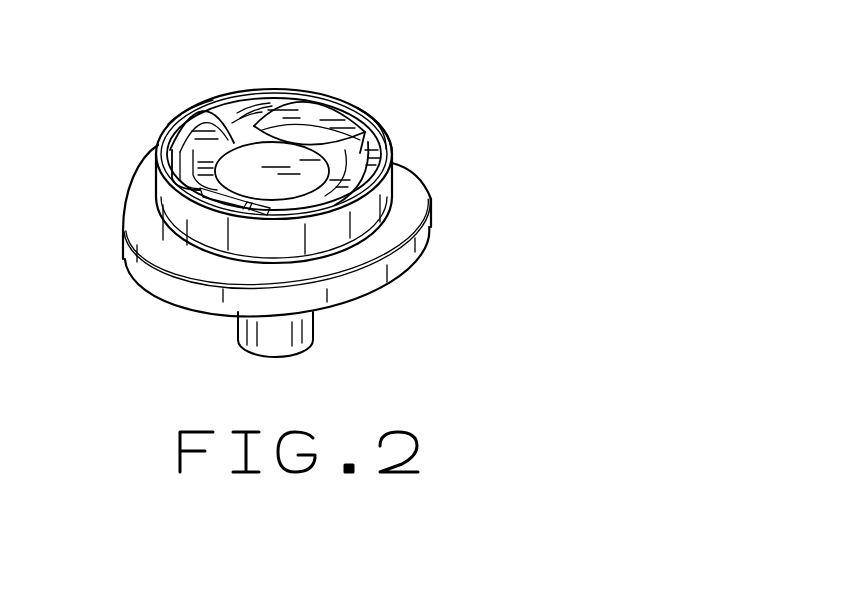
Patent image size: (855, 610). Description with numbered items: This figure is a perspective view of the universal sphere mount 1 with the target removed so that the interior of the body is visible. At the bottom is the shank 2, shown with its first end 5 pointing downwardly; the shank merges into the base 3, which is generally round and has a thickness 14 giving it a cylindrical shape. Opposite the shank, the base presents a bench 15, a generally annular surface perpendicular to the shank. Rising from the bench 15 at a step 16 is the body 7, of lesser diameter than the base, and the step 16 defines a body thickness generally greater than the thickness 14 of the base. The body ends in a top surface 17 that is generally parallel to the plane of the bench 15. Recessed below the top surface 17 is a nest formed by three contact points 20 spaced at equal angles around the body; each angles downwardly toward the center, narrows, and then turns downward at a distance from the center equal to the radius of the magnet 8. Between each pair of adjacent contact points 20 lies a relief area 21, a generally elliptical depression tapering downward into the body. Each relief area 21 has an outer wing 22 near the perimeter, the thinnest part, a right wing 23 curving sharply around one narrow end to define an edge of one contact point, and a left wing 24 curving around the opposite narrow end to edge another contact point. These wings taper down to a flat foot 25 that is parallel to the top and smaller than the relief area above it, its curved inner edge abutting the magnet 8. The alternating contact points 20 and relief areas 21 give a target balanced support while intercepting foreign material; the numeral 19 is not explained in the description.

The mount 1 is at (124, 111).
The shank 2 is at (306, 338).
The base 3 is at (365, 288).
The first end 5 is at (268, 356).
The body 7 is at (156, 187).
The magnet 8 is at (250, 172).
The thickness 14 is at (425, 227).
The bench 15 is at (429, 191).
The step 16 is at (398, 164).
The top surface 17 is at (228, 105).
The annular shoulder 19 is at (205, 182).
The contact point 20 is at (245, 115).
The relief area 21 is at (203, 124).
The outer wing 22 is at (308, 118).
The right wing 23 is at (362, 140).
The left wing 24 is at (291, 135).
The foot 25 is at (340, 128).